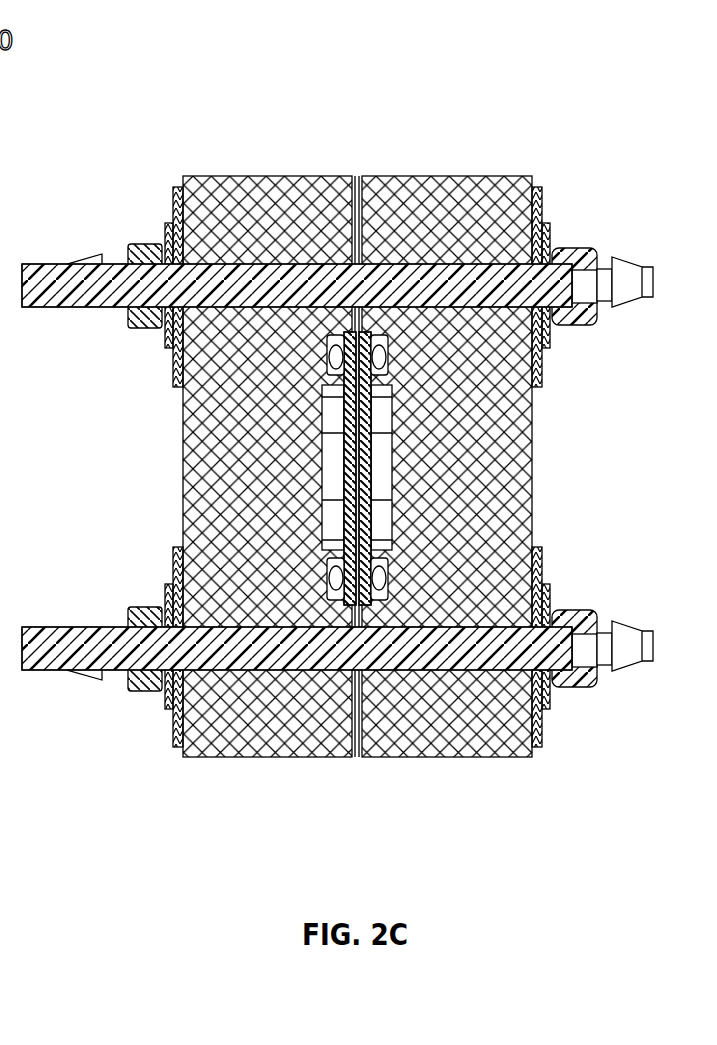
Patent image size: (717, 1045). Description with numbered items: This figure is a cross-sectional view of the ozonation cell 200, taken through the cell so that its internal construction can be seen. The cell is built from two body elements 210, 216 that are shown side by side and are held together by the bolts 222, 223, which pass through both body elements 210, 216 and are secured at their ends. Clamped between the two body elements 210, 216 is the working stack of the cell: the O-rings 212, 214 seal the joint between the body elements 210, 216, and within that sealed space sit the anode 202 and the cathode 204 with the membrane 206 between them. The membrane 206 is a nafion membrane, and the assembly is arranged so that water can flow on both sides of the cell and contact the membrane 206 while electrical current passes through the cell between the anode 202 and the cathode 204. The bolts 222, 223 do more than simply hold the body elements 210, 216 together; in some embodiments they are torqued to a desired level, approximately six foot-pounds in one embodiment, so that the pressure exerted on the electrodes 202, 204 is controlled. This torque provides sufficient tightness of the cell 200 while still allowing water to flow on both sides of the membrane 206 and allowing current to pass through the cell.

The ozonation cell 200 is at (616, 67).
The body element 216 is at (264, 176).
The body element 210 is at (444, 176).
The O-ring 212 is at (332, 358).
The O-ring 214 is at (383, 360).
The anode 202 is at (378, 385).
The cathode 204 is at (333, 556).
The membrane 206 is at (382, 600).
The bolt 223 is at (570, 248).
The bolt 222 is at (570, 688).